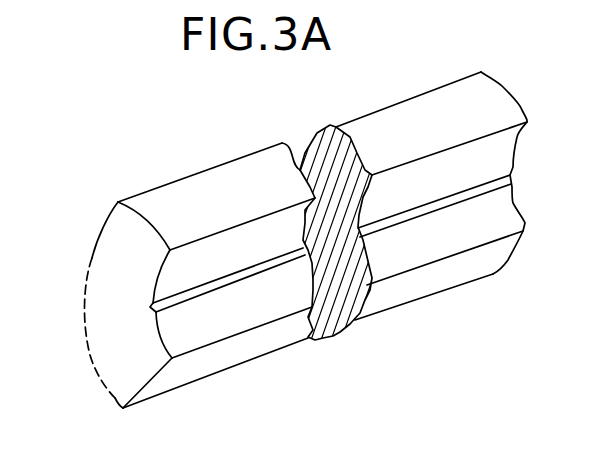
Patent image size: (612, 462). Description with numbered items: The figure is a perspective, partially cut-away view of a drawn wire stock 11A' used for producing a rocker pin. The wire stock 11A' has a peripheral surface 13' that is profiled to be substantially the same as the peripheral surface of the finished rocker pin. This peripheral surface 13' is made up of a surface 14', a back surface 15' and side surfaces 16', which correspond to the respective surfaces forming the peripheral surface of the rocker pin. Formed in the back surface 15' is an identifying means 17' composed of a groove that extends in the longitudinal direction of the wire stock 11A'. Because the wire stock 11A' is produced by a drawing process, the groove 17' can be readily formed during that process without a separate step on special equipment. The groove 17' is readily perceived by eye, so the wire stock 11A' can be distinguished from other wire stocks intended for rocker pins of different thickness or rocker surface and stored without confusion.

The drawn wire stock 11A' is at (239, 257).
The peripheral surface 13' is at (431, 143).
The surface 14' is at (89, 305).
The back surface 15' is at (439, 294).
The side surface 16' is at (216, 287).
The identifying means (groove) 17' is at (373, 295).